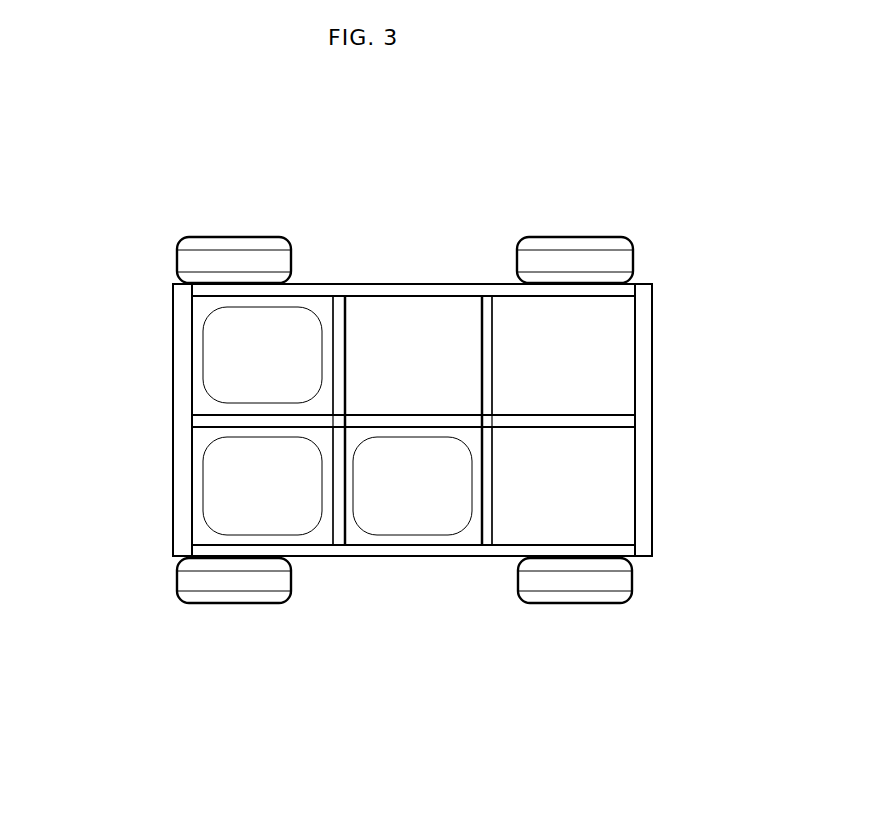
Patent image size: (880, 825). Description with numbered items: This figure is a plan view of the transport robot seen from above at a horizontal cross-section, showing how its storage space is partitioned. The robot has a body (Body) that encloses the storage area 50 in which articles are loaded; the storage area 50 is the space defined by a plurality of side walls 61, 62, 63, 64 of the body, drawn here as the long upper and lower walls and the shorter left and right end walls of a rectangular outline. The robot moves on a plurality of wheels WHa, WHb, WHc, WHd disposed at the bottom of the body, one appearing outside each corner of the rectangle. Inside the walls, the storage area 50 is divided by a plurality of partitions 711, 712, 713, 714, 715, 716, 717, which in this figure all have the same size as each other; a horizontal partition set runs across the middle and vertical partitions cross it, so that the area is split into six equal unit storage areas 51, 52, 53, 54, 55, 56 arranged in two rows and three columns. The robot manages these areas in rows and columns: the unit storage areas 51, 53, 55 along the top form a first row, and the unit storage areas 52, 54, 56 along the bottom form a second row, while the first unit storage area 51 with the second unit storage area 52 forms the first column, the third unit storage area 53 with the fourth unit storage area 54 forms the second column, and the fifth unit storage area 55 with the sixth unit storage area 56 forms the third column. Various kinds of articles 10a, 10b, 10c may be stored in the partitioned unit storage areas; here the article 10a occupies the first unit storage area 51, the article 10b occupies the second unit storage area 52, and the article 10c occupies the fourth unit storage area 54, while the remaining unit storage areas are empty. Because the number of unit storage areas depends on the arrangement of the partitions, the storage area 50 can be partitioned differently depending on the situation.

The storage area 50 is at (615, 310).
The body Body is at (118, 226).
The first unit storage area 51 is at (196, 355).
The second unit storage area 52 is at (196, 506).
The third unit storage area 53 is at (415, 316).
The fourth unit storage area 54 is at (447, 543).
The fifth unit storage area 55 is at (605, 351).
The sixth unit storage area 56 is at (605, 507).
The side wall 61 is at (376, 284).
The side wall 62 is at (413, 548).
The side wall 63 is at (187, 318).
The side wall 64 is at (643, 318).
The partition 711 is at (196, 420).
The partition 712 is at (341, 284).
The partition 713 is at (341, 535).
The partition 714 is at (447, 427).
The partition 715 is at (486, 310).
The partition 716 is at (483, 550).
The partition 717 is at (622, 422).
The article 10a is at (222, 385).
The article 10b is at (222, 471).
The article 10c is at (383, 523).
The wheel WHa is at (232, 600).
The wheel WHb is at (230, 240).
The wheel WHc is at (579, 600).
The wheel WHd is at (578, 240).